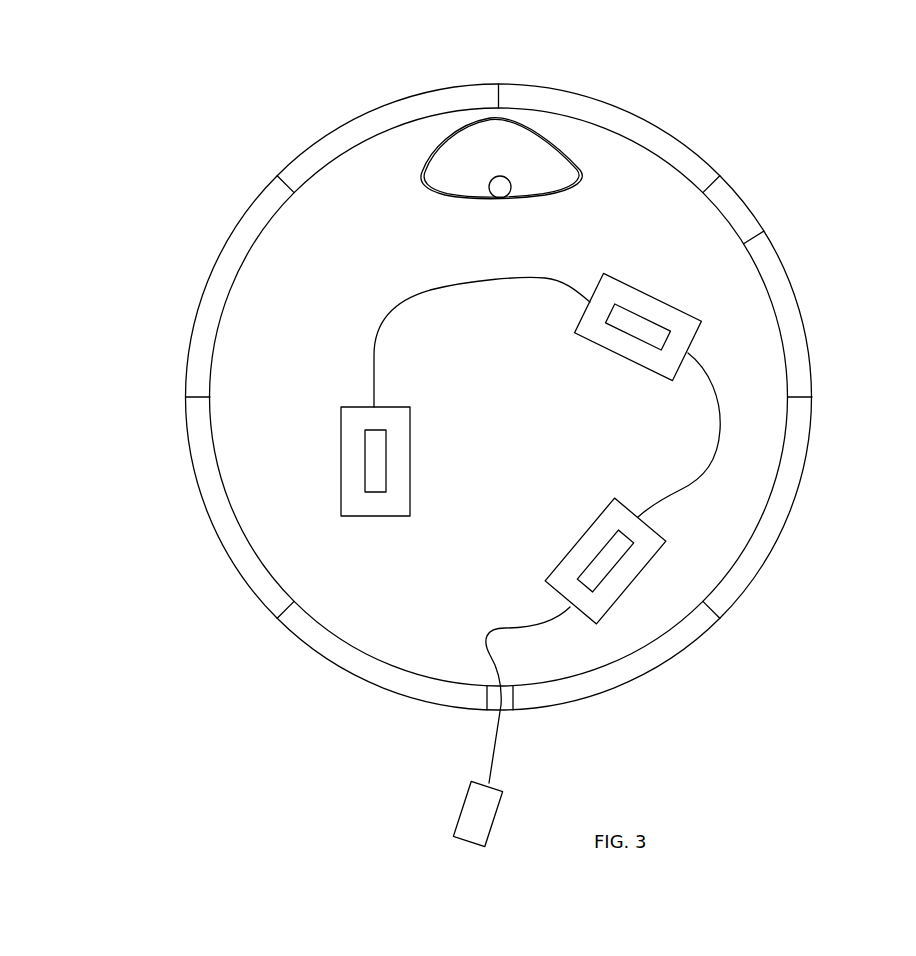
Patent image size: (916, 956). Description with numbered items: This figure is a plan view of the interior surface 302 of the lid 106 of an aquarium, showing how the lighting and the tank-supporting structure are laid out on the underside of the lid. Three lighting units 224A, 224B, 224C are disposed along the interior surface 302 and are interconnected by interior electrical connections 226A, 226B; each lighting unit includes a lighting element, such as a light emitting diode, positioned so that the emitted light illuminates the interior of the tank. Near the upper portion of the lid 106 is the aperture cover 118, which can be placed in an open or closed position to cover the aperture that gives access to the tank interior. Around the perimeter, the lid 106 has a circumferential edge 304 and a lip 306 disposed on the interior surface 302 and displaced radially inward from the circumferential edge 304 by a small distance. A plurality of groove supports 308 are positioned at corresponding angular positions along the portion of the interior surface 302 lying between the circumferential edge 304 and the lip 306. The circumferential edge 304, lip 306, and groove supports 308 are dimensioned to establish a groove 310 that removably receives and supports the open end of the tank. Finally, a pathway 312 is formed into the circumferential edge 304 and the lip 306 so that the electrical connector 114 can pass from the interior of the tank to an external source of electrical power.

The lid 106 is at (697, 93).
The electrical connector 114 is at (472, 782).
The aperture cover 118 is at (557, 170).
The lighting unit 224A is at (410, 488).
The lighting unit 224B is at (580, 319).
The lighting unit 224C is at (610, 498).
The interior electrical connection 226A is at (448, 290).
The interior electrical connection 226B is at (710, 448).
The interior surface 302 is at (393, 627).
The circumferential edge 304 is at (803, 313).
The lip 306 is at (765, 232).
The groove supports 308 is at (498, 87).
The groove 310 is at (781, 282).
The pathway 312 is at (515, 709).